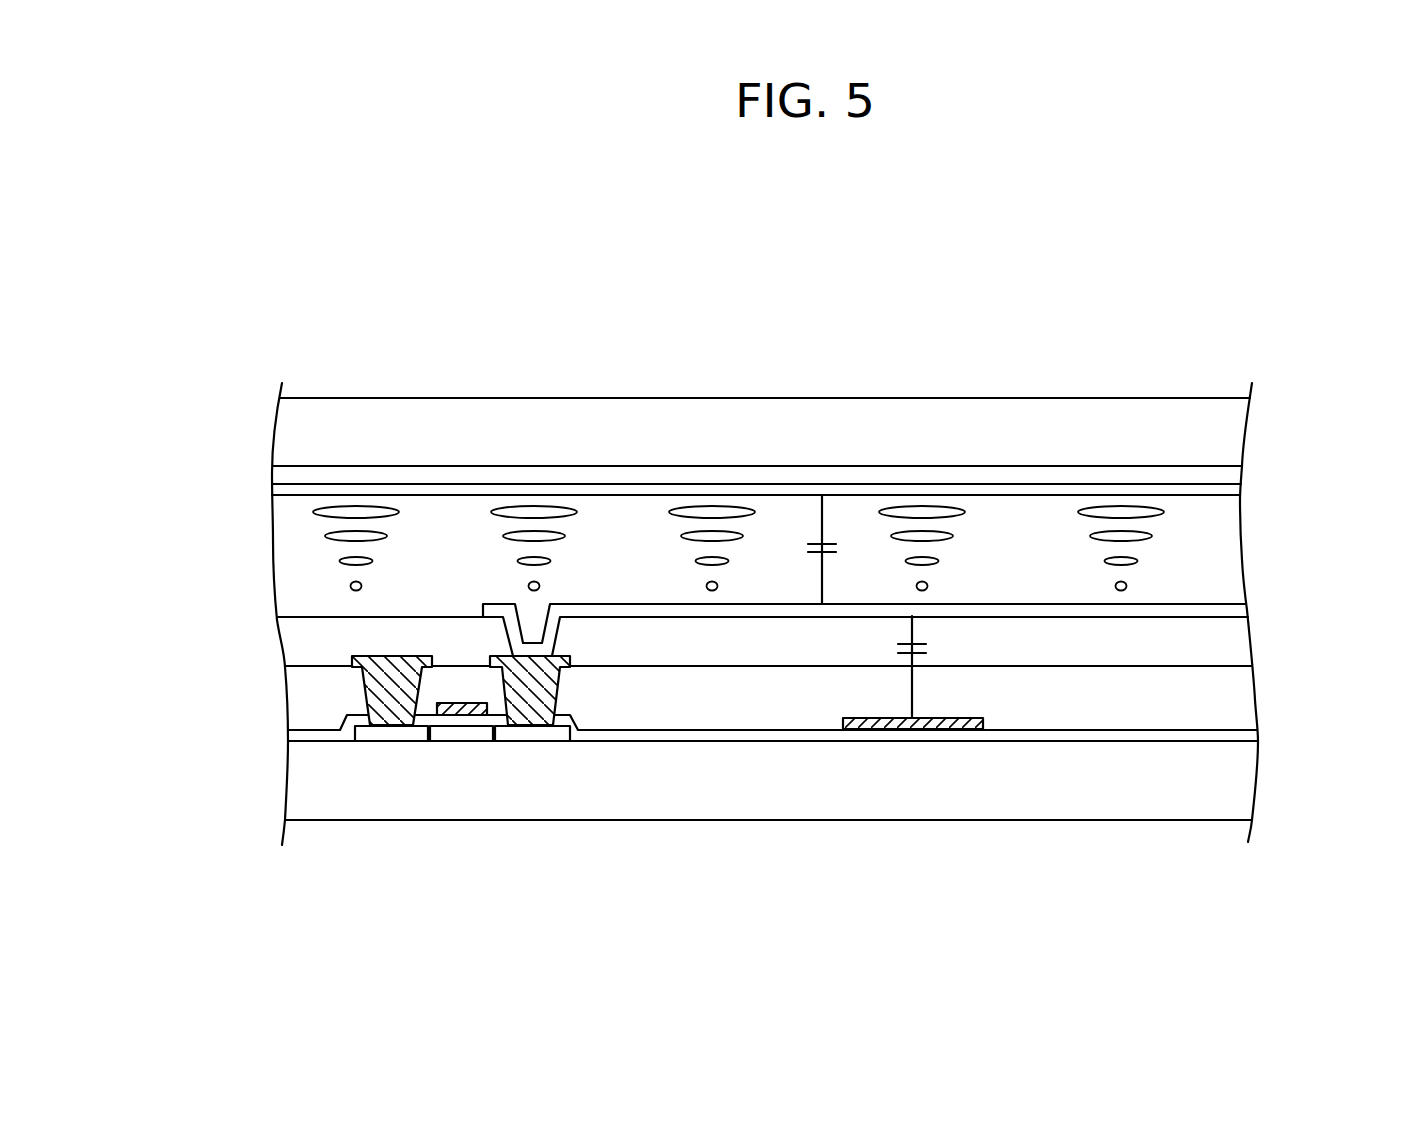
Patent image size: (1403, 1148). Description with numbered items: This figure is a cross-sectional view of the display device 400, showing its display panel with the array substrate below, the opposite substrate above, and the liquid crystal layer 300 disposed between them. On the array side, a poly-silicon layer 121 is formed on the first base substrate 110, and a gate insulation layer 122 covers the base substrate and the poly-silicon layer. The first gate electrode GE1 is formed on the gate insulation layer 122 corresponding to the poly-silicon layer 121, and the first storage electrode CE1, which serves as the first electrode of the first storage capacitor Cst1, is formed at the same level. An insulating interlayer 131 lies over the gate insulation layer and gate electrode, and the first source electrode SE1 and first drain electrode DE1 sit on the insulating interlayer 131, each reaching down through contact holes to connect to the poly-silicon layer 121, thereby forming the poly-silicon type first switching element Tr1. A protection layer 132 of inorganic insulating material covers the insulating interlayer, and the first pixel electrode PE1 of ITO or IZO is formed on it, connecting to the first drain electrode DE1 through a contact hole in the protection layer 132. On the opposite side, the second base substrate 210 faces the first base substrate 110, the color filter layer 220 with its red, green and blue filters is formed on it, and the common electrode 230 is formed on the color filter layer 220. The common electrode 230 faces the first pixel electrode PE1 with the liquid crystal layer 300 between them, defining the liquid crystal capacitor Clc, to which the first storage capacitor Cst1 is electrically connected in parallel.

The display device 400 is at (765, 332).
The second base substrate 210 is at (1240, 418).
The color filter layer 220 is at (1240, 472).
The common electrode 230 is at (1243, 488).
The liquid crystal layer 300 is at (1242, 552).
The liquid crystal capacitor Clc is at (844, 549).
The first pixel electrode PE1 is at (1240, 605).
The protection layer 132 is at (1237, 641).
The insulating interlayer 131 is at (1250, 694).
The first storage capacitor Cst1 is at (940, 672).
The first storage electrode CE1 is at (912, 729).
The gate insulation layer 122 is at (313, 737).
The poly-silicon layer 121 is at (467, 733).
The first gate electrode GE1 is at (473, 706).
The first source electrode SE1 is at (393, 718).
The first drain electrode DE1 is at (542, 771).
The first switching element Tr1 is at (473, 792).
The first base substrate 110 is at (1252, 781).